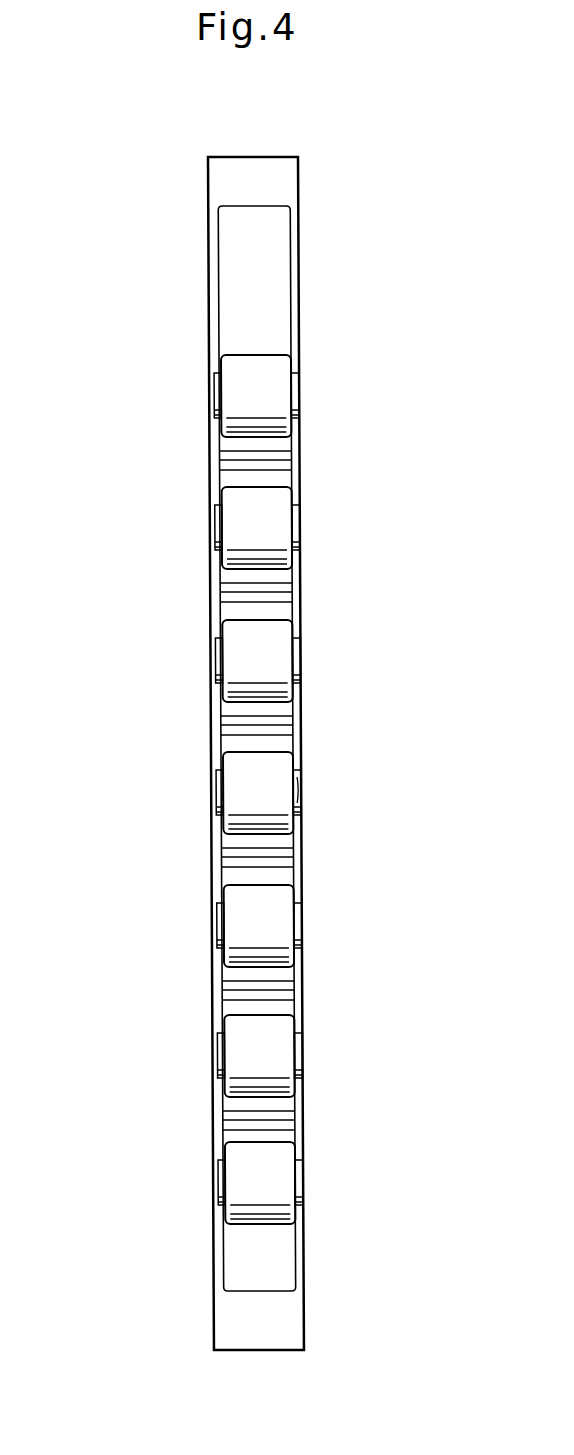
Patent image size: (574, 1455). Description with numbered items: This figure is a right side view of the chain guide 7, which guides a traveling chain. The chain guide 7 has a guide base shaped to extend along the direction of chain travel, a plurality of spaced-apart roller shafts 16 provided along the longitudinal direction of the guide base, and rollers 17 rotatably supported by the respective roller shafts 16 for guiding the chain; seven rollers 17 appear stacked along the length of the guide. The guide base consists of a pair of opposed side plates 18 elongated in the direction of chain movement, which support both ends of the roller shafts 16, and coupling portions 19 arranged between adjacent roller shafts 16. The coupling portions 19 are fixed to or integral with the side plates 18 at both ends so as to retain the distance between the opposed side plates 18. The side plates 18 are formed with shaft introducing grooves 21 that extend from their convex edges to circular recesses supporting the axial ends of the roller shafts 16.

The chain guide 7 is at (206, 188).
The roller shafts 16 is at (218, 397).
The rollers 17 is at (277, 365).
The side plates 18 is at (212, 302).
The coupling portions 19 is at (283, 727).
The shaft introducing grooves 21 is at (302, 778).